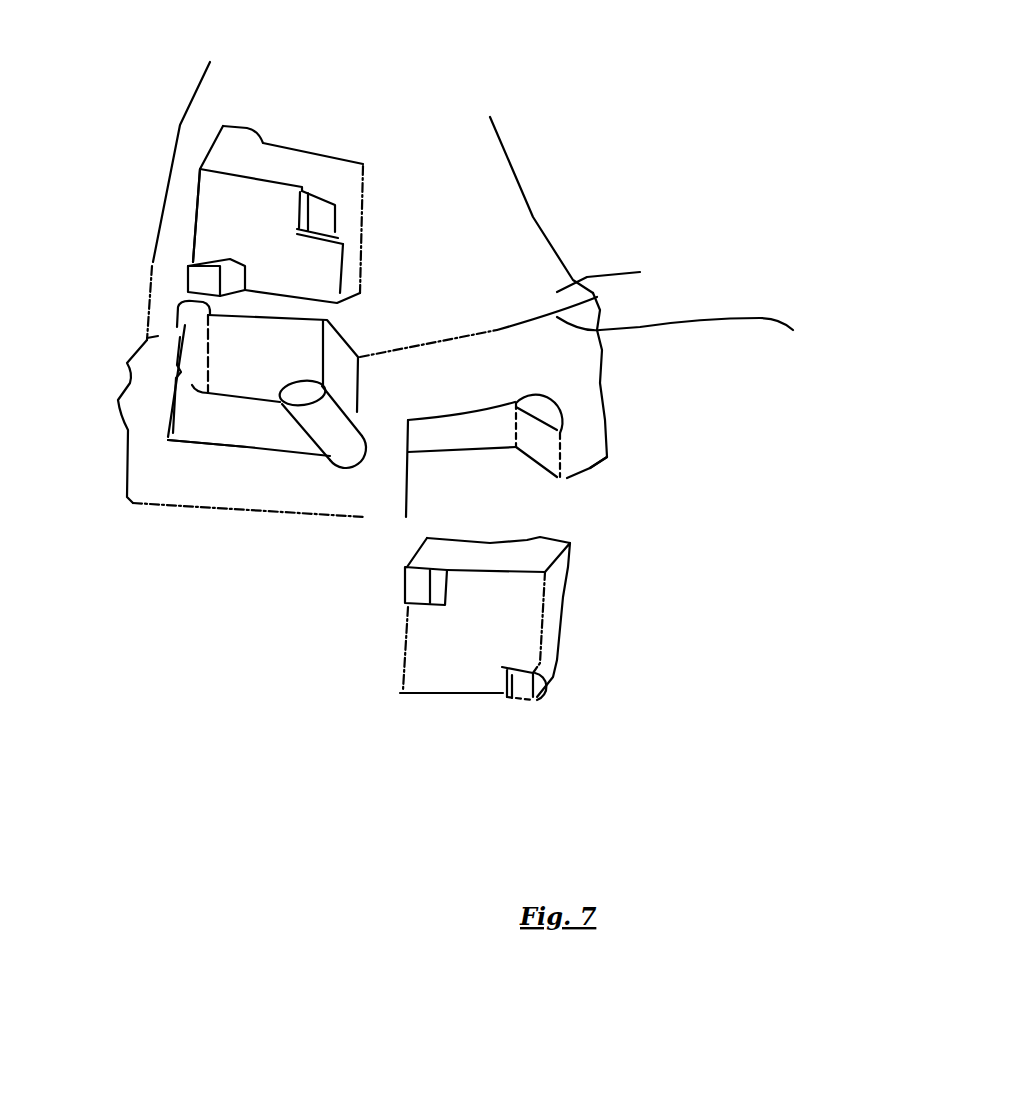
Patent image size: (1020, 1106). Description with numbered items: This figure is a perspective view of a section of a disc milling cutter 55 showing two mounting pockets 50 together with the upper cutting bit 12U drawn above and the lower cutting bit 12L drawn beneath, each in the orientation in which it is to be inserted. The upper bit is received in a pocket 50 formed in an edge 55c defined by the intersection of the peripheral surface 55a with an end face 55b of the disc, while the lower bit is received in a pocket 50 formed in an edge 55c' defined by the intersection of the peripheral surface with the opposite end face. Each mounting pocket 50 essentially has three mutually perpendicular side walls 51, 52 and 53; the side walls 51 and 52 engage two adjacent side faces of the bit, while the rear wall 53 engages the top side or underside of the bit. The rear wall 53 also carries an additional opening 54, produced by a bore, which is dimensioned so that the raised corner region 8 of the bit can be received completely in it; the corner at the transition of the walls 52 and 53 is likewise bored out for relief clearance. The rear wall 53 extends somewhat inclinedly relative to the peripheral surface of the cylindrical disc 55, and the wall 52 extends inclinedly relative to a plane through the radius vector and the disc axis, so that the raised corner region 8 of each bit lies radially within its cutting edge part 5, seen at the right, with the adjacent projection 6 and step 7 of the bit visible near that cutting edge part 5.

The upper frame member 12U is at (298, 137).
The lower frame member 12L is at (433, 713).
The raised corner region 8 is at (322, 208).
The engagement projection 6 is at (337, 206).
The step portion 7 is at (345, 225).
The cutting edge part 5 is at (363, 277).
The disc milling cutter 55 is at (515, 243).
The peripheral surface 55a is at (597, 383).
The end face 55b is at (644, 263).
The edge 55c is at (721, 315).
The edge 55c' is at (682, 480).
The mounting pocket 50 is at (270, 433).
The side wall 51 is at (217, 423).
The side wall 52 is at (170, 396).
The rear wall 53 is at (245, 333).
The opening 54 is at (310, 397).